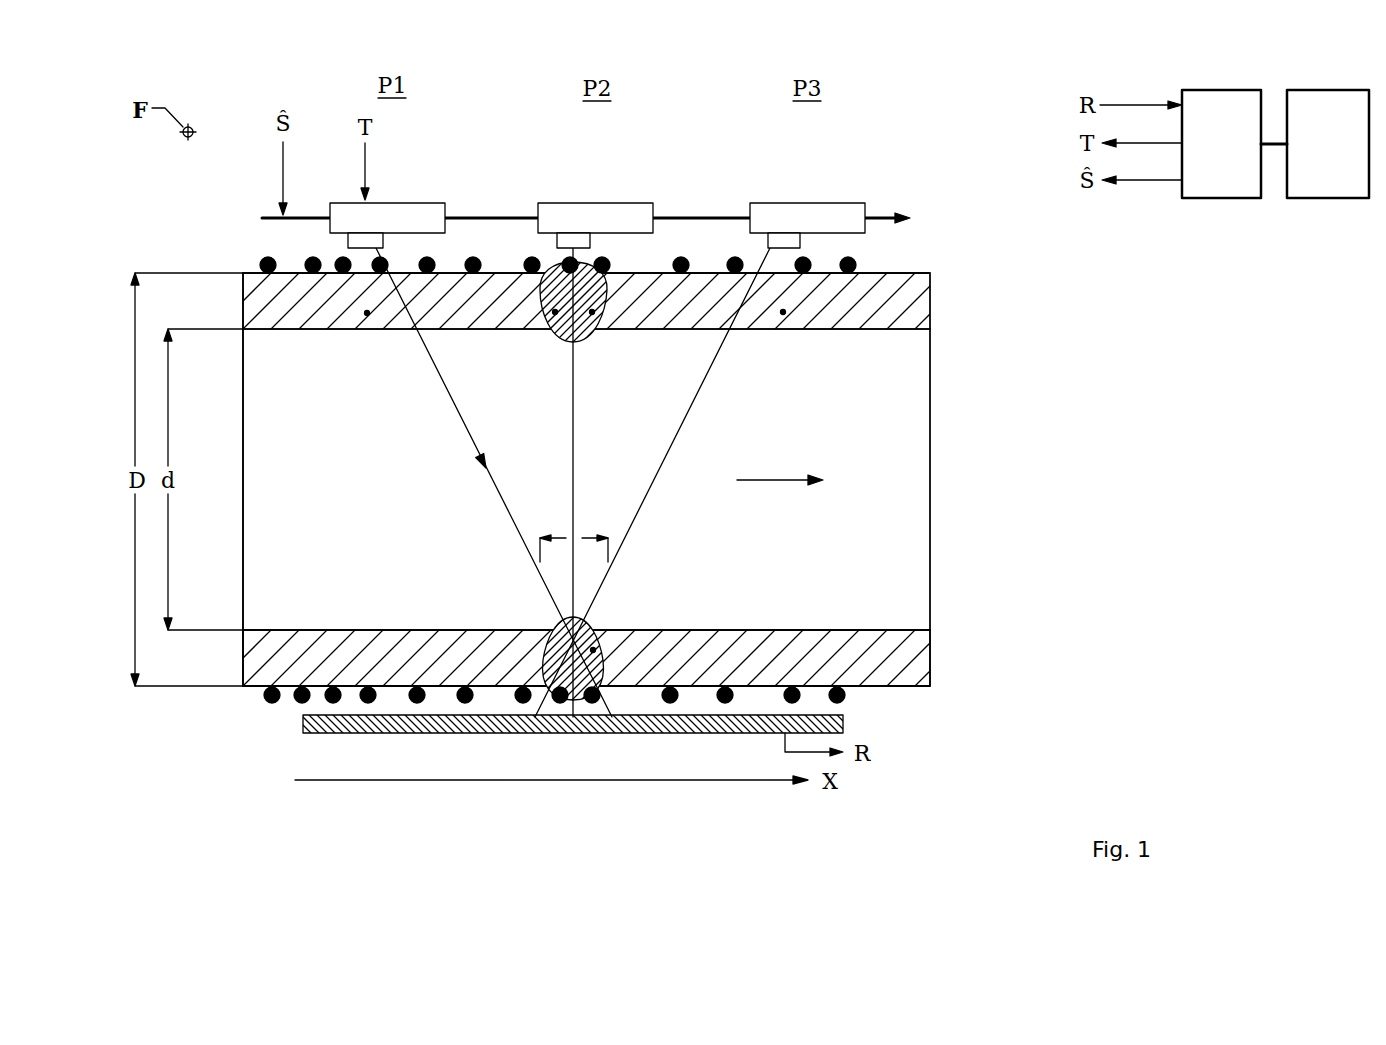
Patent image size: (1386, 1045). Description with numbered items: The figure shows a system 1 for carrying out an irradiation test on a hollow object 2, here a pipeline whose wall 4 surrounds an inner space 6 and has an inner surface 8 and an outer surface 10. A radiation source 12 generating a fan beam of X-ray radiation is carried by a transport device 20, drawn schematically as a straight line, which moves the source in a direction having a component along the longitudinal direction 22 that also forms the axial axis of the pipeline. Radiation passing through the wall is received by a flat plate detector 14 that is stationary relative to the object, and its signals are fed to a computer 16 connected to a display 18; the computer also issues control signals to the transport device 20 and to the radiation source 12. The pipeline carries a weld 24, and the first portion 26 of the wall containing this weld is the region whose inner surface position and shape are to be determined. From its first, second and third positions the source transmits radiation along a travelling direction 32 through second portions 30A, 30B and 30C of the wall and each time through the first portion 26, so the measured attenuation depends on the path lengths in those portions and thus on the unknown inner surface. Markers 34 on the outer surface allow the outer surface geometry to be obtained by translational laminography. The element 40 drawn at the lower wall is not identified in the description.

The system 1 is at (1035, 725).
The hollow object 2 is at (262, 480).
The wall 4 is at (250, 660).
The inner space 6 is at (354, 491).
The inner surface 8 is at (583, 479).
The outer surface 10 is at (253, 746).
The radiation source 12 is at (417, 203).
The flat plate detector 14 is at (350, 730).
The computer 16 is at (1208, 155).
The display 18 is at (1314, 155).
The transport device 20 is at (556, 204).
The longitudinal direction 22 is at (770, 478).
The weld 24 is at (572, 481).
The first portion of the wall 26 is at (578, 524).
The second portion of the wall 30A is at (367, 316).
The second portion of the wall 30B is at (505, 341).
The second portion of the wall 30C is at (783, 316).
The travelling direction of the radiation 32 is at (573, 482).
The markers 34 is at (683, 258).
The top plate 40 is at (913, 660).